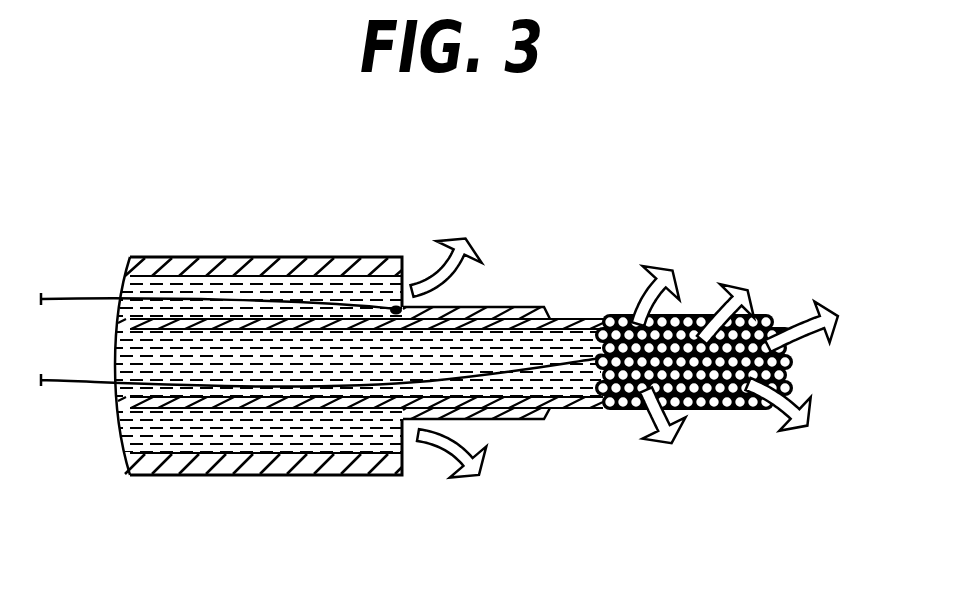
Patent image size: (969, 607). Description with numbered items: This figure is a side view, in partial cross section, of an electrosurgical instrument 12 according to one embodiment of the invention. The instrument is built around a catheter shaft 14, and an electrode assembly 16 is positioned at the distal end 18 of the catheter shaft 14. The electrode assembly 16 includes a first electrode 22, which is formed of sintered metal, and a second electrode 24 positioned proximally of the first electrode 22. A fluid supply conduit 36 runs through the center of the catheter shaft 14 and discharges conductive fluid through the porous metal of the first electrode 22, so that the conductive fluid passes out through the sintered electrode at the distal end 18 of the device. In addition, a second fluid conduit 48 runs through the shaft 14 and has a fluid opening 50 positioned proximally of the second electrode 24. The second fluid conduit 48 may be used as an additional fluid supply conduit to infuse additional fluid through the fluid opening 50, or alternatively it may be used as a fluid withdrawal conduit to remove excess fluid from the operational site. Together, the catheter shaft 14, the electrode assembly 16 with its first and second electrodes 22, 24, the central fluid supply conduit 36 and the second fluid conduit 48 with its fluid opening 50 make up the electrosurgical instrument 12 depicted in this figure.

The electrosurgical instrument 12 is at (475, 197).
The catheter shaft 14 is at (337, 477).
The electrode assembly 16 is at (630, 412).
The distal end 18 is at (795, 375).
The first electrode 22 is at (720, 408).
The second electrode 24 is at (530, 420).
The fluid supply conduit 36 is at (501, 343).
The second fluid conduit 48 is at (352, 302).
The fluid opening 50 is at (403, 292).